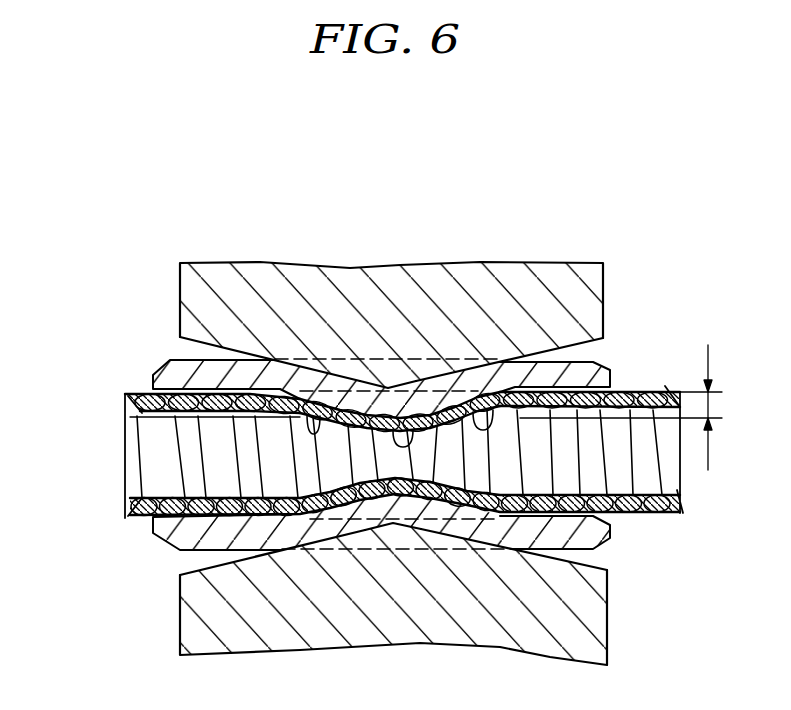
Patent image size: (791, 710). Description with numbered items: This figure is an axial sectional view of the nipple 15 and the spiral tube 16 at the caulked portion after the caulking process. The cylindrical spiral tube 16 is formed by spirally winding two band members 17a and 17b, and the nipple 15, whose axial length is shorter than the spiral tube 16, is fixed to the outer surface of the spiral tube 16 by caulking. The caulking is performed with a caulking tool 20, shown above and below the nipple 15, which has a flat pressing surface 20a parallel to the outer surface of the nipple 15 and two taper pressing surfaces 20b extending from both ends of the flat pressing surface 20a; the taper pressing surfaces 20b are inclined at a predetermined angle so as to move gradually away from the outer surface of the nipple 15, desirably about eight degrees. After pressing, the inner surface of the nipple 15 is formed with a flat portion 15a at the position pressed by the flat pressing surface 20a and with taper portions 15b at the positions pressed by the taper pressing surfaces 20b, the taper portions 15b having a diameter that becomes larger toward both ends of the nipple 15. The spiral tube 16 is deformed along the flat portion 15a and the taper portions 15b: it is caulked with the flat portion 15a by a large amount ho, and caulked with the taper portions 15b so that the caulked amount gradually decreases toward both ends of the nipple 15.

The caulking tool 20 is at (180, 272).
The flat pressing surface 20a is at (352, 392).
The taper pressing surfaces 20b is at (232, 350).
The band member 17a is at (605, 289).
The band member 17b is at (613, 387).
The nipple 15 is at (170, 363).
The flat portion 15a is at (392, 416).
The taper portions 15b is at (338, 395).
The spiral tube 16 is at (652, 522).
The caulked amount ho is at (711, 411).